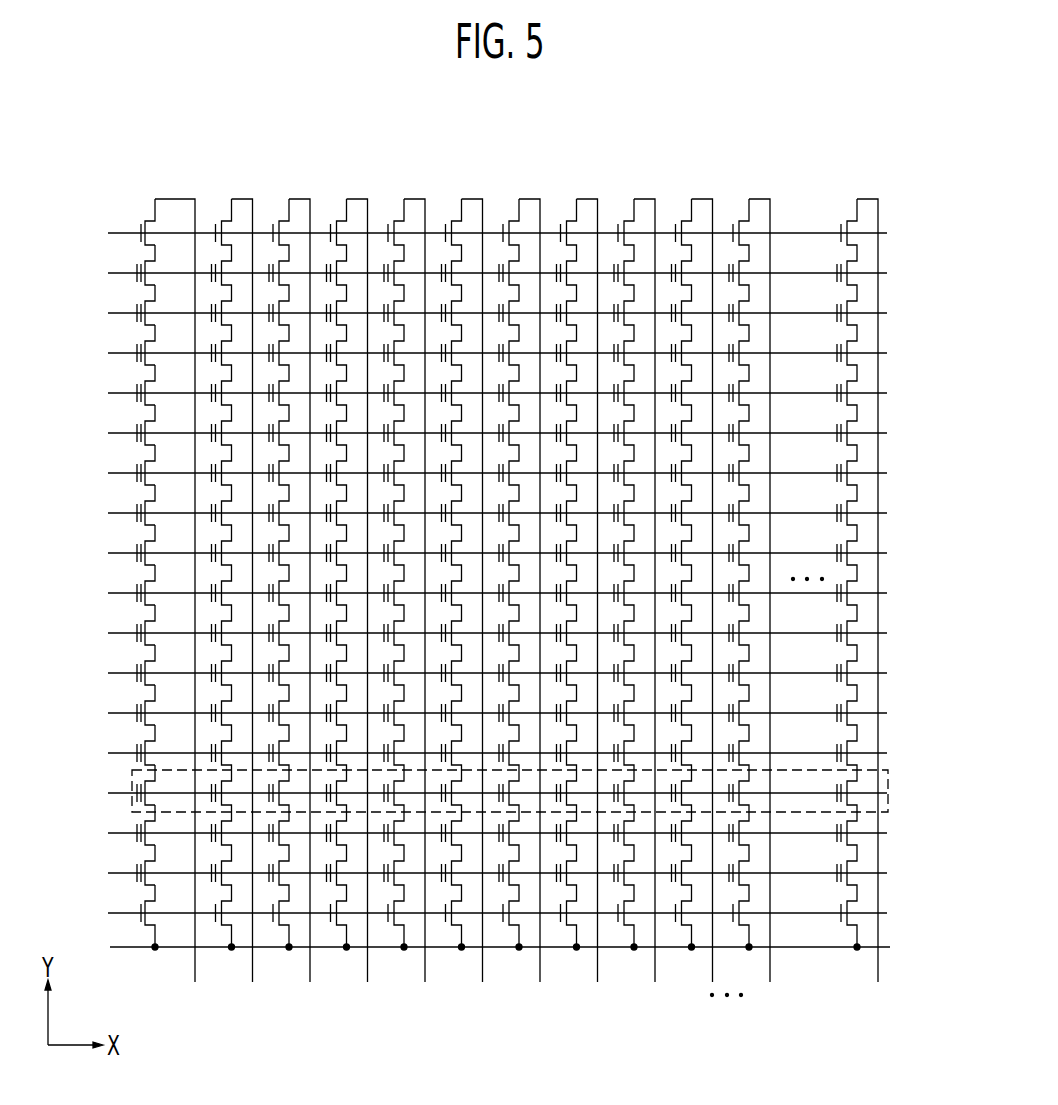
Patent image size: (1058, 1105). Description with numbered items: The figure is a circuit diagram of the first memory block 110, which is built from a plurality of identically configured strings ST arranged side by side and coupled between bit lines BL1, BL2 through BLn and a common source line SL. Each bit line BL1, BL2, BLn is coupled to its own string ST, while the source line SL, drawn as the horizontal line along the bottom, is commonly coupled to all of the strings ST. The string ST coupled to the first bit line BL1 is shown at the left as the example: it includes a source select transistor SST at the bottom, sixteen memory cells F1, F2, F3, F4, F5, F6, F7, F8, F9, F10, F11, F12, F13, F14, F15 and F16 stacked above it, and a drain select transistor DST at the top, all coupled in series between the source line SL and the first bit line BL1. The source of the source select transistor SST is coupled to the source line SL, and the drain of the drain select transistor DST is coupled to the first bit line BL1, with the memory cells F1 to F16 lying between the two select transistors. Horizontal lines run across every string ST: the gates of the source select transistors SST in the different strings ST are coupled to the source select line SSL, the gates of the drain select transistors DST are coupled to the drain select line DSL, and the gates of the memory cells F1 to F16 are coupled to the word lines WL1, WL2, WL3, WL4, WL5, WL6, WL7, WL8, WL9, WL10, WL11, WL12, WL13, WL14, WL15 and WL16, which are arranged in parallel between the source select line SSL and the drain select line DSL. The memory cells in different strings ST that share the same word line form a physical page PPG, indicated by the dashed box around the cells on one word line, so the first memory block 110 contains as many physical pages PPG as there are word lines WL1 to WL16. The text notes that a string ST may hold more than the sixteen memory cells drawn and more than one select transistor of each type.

The first memory block 110 is at (790, 172).
The string ST is at (185, 194).
The physical page PPG is at (889, 792).
The drain select transistor DST is at (165, 222).
The source select transistor SST is at (164, 917).
The memory cell F1 is at (157, 864).
The memory cell F2 is at (157, 824).
The memory cell F3 is at (157, 784).
The memory cell F4 is at (157, 744).
The memory cell F5 is at (157, 704).
The memory cell F6 is at (157, 664).
The memory cell F7 is at (157, 624).
The memory cell F8 is at (157, 584).
The memory cell F9 is at (157, 544).
The memory cell F10 is at (162, 504).
The memory cell F11 is at (162, 464).
The memory cell F12 is at (162, 424).
The memory cell F13 is at (162, 384).
The memory cell F14 is at (162, 344).
The memory cell F15 is at (162, 304).
The memory cell F16 is at (162, 264).
The drain select line DSL is at (482, 233).
The source select line SSL is at (483, 913).
The source line SL is at (489, 947).
The word line WL1 is at (480, 873).
The word line WL2 is at (480, 833).
The word line WL3 is at (480, 793).
The word line WL4 is at (480, 753).
The word line WL5 is at (480, 713).
The word line WL6 is at (480, 673).
The word line WL7 is at (480, 633).
The word line WL8 is at (480, 593).
The word line WL9 is at (480, 553).
The word line WL10 is at (476, 513).
The word line WL11 is at (476, 473).
The word line WL12 is at (476, 433).
The word line WL13 is at (476, 393).
The word line WL14 is at (476, 353).
The word line WL15 is at (476, 313).
The word line WL16 is at (476, 273).
The first bit line BL1 is at (183, 605).
The bit line BL2 is at (250, 605).
The bit line BLn is at (875, 605).